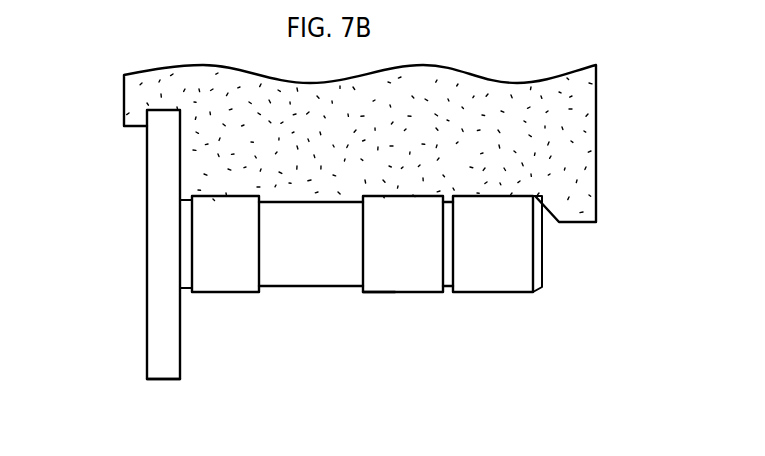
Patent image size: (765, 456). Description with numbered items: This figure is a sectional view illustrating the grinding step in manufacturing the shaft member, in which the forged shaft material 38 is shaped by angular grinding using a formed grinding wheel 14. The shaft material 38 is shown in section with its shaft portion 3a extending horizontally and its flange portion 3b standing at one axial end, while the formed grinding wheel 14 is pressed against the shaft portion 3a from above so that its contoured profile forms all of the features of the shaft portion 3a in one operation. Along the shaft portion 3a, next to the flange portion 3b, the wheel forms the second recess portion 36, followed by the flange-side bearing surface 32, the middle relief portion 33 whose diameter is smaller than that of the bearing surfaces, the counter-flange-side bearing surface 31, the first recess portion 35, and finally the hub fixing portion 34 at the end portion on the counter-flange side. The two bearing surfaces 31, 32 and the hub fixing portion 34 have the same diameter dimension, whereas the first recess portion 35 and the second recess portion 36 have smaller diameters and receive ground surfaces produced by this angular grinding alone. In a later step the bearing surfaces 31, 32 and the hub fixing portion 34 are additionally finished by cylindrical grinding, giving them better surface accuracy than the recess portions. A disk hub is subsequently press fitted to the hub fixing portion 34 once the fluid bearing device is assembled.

The formed grinding wheel 14 is at (608, 142).
The shaft material 38 is at (117, 158).
The flange portion 3b is at (162, 380).
The second recess portion 36 is at (184, 290).
The bearing surface 32 is at (237, 293).
The middle relief portion 33 is at (309, 287).
The bearing surface 31 is at (409, 294).
The shaft portion 3a is at (381, 306).
The first recess portion 35 is at (446, 290).
The hub fixing portion 34 is at (502, 294).